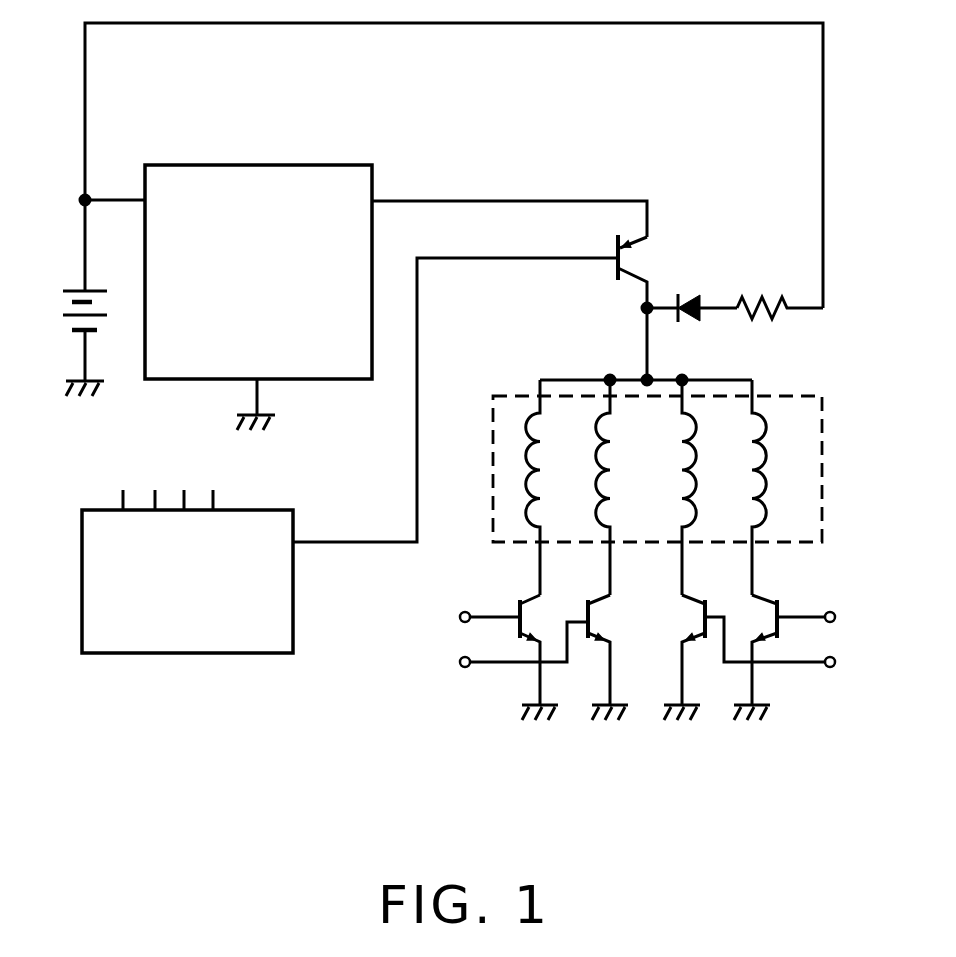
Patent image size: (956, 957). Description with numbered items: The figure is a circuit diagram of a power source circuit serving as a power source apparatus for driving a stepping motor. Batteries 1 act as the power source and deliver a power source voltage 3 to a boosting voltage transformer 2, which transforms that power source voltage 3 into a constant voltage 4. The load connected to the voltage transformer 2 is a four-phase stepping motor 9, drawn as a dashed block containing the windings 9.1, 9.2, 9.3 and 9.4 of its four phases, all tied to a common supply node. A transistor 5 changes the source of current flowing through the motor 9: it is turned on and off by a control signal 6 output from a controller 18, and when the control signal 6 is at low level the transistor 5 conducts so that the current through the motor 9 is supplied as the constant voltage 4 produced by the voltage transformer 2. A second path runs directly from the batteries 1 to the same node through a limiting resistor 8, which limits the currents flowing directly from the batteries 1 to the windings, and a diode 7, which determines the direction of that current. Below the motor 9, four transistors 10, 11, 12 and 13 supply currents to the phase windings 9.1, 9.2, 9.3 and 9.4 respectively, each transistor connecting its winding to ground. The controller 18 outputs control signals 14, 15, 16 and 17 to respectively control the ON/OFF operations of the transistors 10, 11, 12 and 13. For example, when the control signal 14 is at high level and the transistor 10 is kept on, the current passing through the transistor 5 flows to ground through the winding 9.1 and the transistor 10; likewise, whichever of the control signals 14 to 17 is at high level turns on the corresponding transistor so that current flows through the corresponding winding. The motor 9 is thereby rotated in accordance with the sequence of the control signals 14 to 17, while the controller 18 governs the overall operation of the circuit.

The batteries 1 is at (62, 303).
The boosting voltage transformer 2 is at (265, 163).
The power source voltage 3 is at (143, 197).
The constant voltage 4 is at (377, 193).
The transistor 5 is at (623, 258).
The control signal 6 is at (527, 256).
The diode 7 is at (690, 297).
The limiting resistor 8 is at (753, 297).
The 4-phase stepping motor 9 is at (822, 428).
The winding 9.1 is at (530, 453).
The winding 9.2 is at (600, 453).
The winding 9.3 is at (698, 450).
The winding 9.4 is at (766, 450).
The transistor 10 is at (528, 593).
The transistor 11 is at (597, 595).
The transistor 12 is at (685, 606).
The transistor 13 is at (763, 607).
The control signal 14 is at (458, 617).
The control signal 15 is at (458, 662).
The control signal 16 is at (836, 662).
The control signal 17 is at (836, 617).
The controller 18 is at (250, 653).